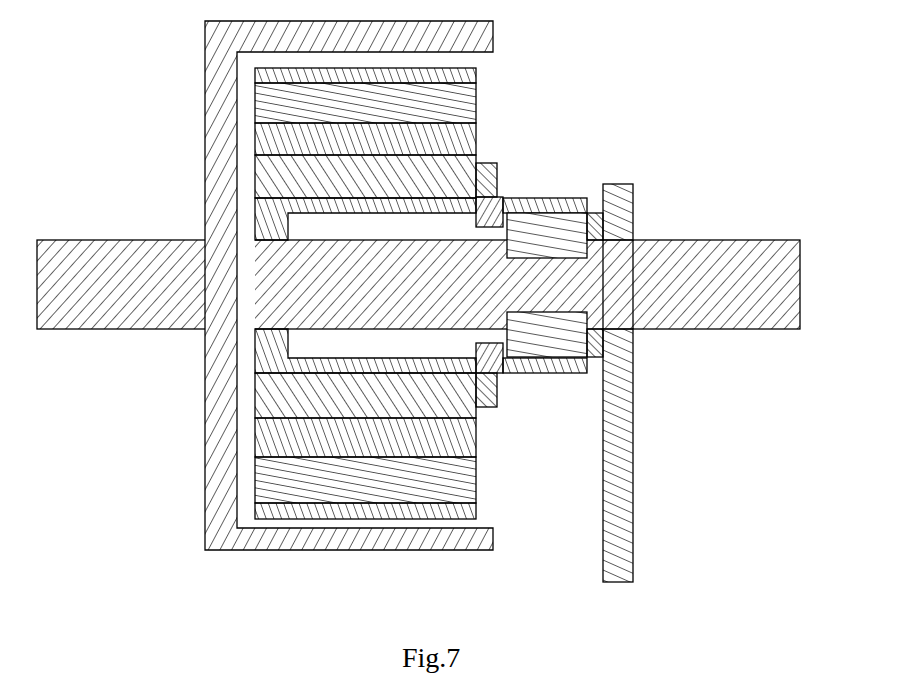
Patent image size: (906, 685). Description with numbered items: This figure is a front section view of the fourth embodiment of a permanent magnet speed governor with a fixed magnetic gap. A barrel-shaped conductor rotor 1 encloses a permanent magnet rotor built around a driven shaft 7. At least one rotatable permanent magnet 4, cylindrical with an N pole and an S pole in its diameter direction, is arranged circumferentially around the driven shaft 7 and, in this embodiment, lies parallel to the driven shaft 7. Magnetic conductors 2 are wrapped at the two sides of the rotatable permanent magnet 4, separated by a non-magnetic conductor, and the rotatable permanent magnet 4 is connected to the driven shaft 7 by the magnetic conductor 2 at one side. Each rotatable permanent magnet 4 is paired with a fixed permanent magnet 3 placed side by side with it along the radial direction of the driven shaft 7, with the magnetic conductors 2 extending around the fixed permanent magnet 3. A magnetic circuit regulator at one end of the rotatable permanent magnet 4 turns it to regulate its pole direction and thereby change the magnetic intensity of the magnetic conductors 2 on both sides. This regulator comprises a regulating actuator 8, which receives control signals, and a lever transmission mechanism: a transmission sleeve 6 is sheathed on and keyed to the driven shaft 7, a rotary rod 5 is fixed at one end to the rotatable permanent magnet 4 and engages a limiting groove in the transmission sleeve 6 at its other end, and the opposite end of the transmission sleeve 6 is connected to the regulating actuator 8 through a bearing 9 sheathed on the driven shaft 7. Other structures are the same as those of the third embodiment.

The conductor rotor 1 is at (261, 285).
The magnetic conductor 2 is at (255, 350).
The fixed permanent magnet 3 is at (458, 492).
The rotatable permanent magnet 4 is at (453, 403).
The rotary rod 5 is at (495, 163).
The transmission sleeve 6 is at (553, 197).
The driven shaft 7 is at (750, 239).
The regulating actuator 8 is at (633, 527).
The bearing 9 is at (588, 356).